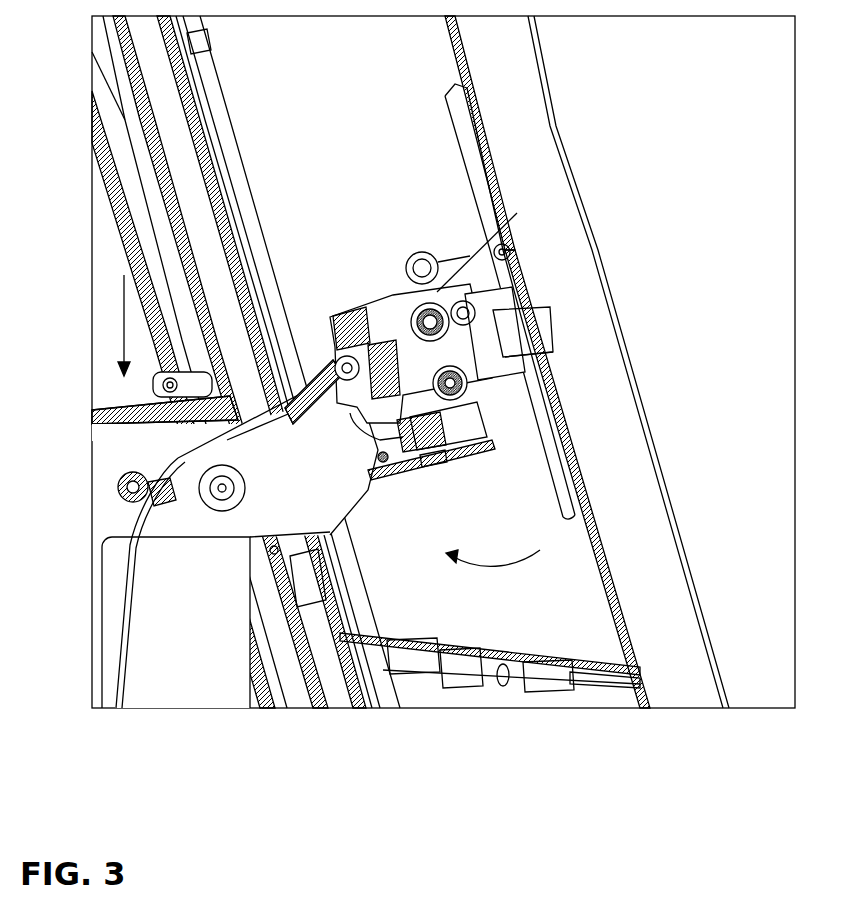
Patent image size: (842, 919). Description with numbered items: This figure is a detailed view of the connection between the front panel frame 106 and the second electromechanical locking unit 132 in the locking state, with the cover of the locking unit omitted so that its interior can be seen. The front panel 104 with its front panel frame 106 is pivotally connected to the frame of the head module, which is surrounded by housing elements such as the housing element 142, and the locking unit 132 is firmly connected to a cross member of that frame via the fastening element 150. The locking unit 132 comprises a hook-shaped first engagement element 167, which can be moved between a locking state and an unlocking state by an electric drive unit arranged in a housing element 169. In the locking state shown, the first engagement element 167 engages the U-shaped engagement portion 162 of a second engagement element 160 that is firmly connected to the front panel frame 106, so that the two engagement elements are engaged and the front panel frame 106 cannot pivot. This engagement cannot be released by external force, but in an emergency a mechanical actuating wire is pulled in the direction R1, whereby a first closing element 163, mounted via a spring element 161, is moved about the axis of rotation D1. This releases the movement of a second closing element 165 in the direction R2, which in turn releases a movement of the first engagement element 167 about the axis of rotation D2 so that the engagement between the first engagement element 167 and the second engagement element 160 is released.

The front panel 104 is at (628, 362).
The front panel frame 106 is at (547, 362).
The second electromechanical locking unit 132 is at (383, 302).
The housing element 142 is at (103, 548).
The fastening element 150 is at (176, 615).
The second engagement element 160 is at (510, 301).
The spring element 161 is at (400, 267).
The U-shaped engagement portion 162 is at (517, 319).
The first closing element 163 is at (434, 478).
The second closing element 165 is at (431, 490).
The first engagement element 167 is at (531, 232).
The housing element 169 is at (326, 286).
The axis of rotation D1 is at (548, 332).
The axis of rotation D2 is at (488, 220).
The direction R1 is at (77, 325).
The direction R2 is at (493, 587).